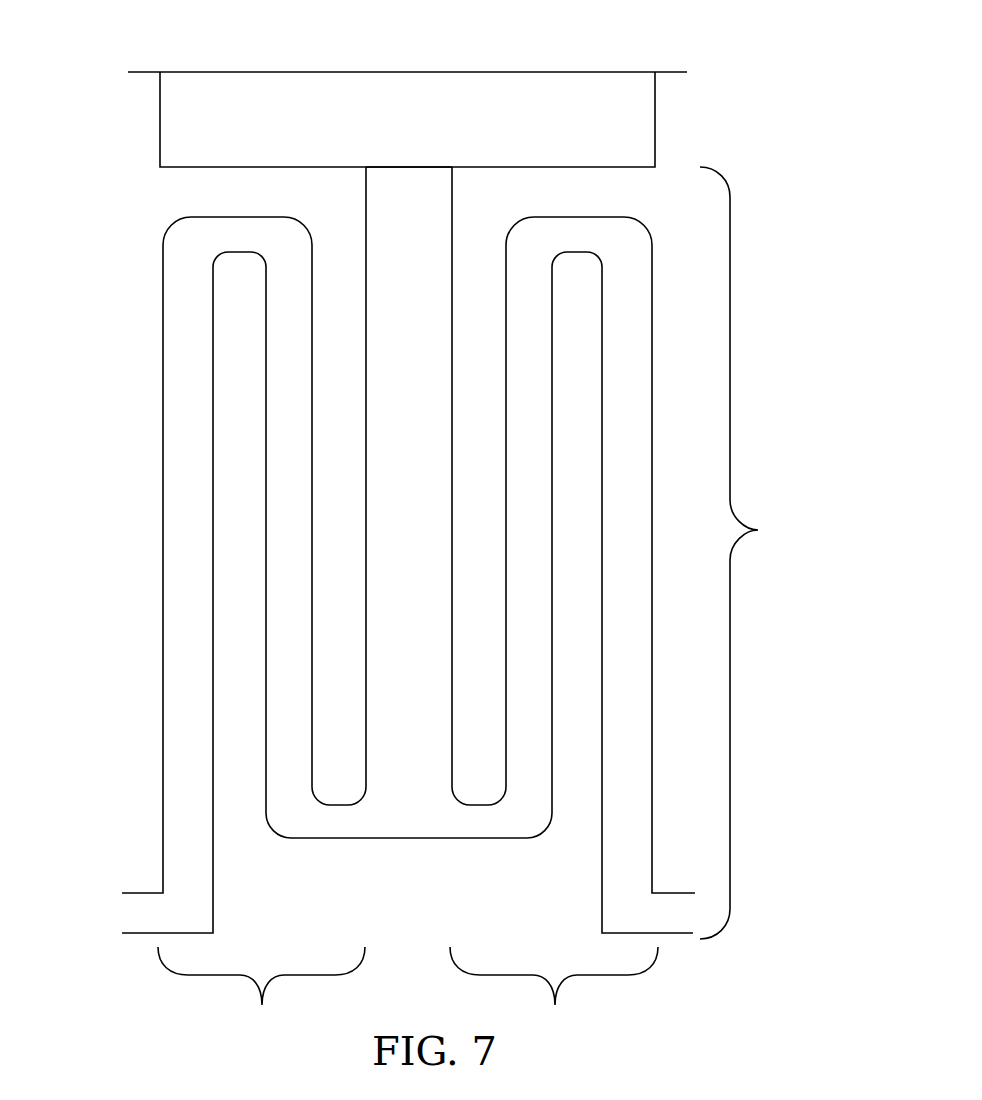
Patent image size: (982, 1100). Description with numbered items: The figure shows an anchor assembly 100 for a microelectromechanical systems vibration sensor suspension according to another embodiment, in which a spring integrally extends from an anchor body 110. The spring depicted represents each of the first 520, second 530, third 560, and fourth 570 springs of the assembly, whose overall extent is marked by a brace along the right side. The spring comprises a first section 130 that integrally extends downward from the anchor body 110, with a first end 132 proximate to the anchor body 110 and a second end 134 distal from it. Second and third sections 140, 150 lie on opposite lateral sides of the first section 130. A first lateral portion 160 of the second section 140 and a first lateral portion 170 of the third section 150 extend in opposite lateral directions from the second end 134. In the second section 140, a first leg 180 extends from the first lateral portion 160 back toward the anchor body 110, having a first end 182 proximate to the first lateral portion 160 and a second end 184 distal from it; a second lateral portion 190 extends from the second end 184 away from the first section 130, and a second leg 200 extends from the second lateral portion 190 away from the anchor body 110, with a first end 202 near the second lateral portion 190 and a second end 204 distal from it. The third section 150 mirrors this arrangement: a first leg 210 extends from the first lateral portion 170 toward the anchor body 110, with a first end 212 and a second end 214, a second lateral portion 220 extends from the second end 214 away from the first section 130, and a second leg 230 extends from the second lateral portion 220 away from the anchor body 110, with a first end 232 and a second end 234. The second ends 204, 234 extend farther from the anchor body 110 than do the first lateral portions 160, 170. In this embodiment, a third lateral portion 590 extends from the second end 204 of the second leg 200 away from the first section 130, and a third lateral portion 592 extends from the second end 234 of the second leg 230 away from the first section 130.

The anchor assembly 100 is at (238, 58).
The anchor body 110 is at (586, 85).
The first section 130 is at (433, 380).
The first end 132 is at (352, 175).
The second end 134 is at (409, 850).
The second section 140 is at (261, 993).
The third section 150 is at (554, 991).
The first lateral portion 160 is at (338, 828).
The first lateral portion 170 is at (477, 828).
The first leg 180 is at (287, 417).
The first end 182 is at (284, 850).
The second end 184 is at (325, 236).
The second lateral portion 190 is at (239, 227).
The second leg 200 is at (182, 570).
The first end 202 is at (150, 231).
The second end 204 is at (150, 887).
The first leg 210 is at (530, 657).
The first end 212 is at (531, 850).
The second end 214 is at (486, 230).
The second lateral portion 220 is at (578, 227).
The second leg 230 is at (640, 568).
The first end 232 is at (672, 238).
The second end 234 is at (665, 888).
The first spring 520 is at (786, 553).
The second spring 530 is at (786, 553).
The third spring 560 is at (786, 553).
The fourth spring 570 is at (786, 553).
The third lateral portion 590 is at (125, 918).
The third lateral portion 592 is at (683, 920).